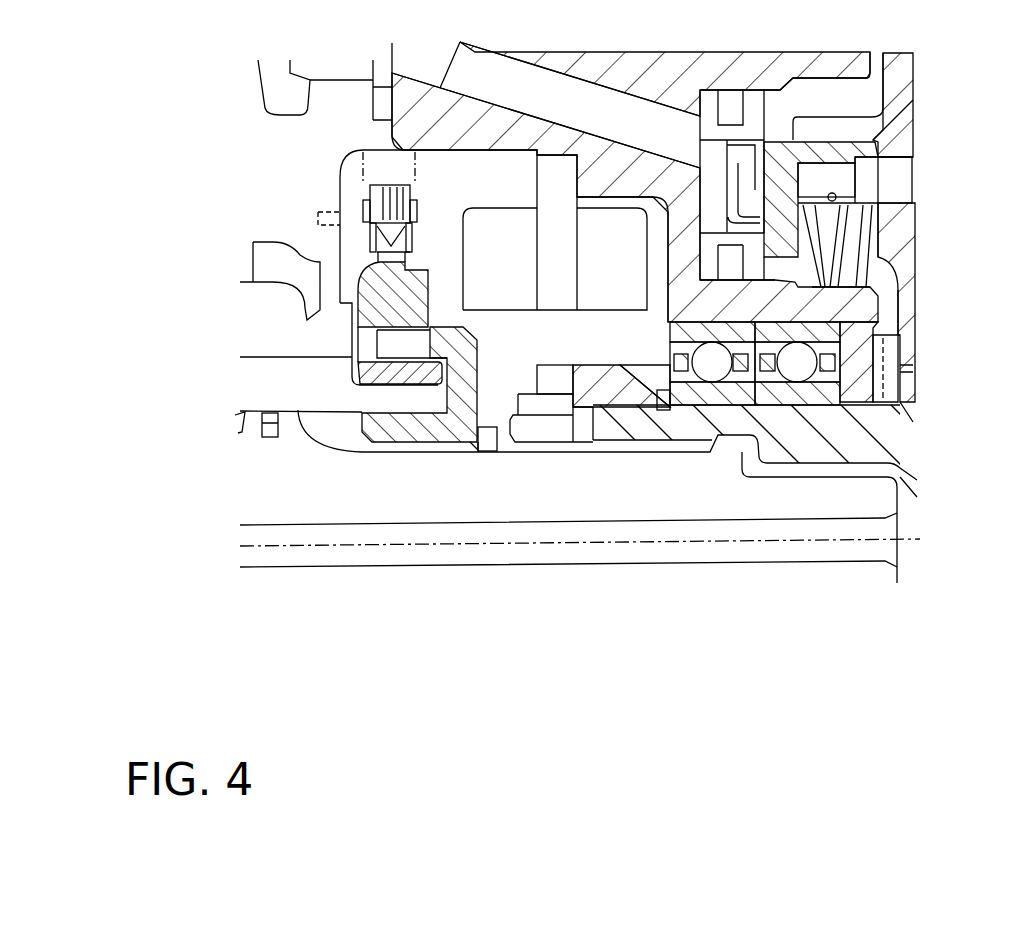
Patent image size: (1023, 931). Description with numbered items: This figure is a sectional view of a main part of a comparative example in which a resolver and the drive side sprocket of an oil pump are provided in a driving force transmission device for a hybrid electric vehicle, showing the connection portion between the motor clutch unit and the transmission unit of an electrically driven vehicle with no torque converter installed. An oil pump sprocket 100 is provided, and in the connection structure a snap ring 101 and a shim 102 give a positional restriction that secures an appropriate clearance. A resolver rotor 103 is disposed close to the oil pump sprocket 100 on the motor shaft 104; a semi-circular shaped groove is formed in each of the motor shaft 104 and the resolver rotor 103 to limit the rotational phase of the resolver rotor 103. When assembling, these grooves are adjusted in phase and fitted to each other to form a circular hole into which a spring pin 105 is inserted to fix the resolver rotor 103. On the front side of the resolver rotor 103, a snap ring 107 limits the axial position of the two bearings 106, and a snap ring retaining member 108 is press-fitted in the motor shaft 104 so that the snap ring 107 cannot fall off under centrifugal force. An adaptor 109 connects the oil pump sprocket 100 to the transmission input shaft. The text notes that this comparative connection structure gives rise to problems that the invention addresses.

The oil pump sprocket 100 is at (395, 294).
The snap ring 101 is at (490, 438).
The shim 102 is at (478, 442).
The resolver rotor 103 is at (555, 380).
The motor shaft 104 is at (842, 435).
The spring pin 105 is at (528, 417).
The bearings 106 is at (734, 330).
The snap ring 107 is at (664, 401).
The snap ring retaining member 108 is at (613, 387).
The adaptor 109 is at (413, 433).